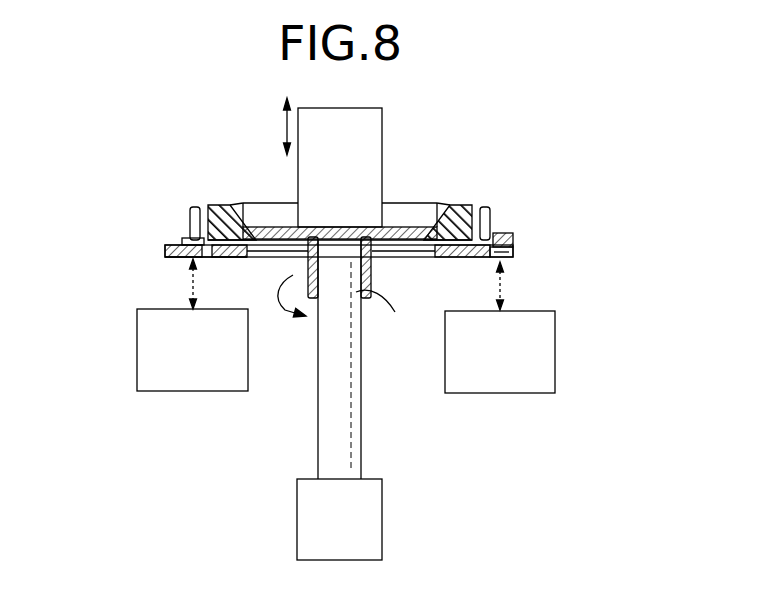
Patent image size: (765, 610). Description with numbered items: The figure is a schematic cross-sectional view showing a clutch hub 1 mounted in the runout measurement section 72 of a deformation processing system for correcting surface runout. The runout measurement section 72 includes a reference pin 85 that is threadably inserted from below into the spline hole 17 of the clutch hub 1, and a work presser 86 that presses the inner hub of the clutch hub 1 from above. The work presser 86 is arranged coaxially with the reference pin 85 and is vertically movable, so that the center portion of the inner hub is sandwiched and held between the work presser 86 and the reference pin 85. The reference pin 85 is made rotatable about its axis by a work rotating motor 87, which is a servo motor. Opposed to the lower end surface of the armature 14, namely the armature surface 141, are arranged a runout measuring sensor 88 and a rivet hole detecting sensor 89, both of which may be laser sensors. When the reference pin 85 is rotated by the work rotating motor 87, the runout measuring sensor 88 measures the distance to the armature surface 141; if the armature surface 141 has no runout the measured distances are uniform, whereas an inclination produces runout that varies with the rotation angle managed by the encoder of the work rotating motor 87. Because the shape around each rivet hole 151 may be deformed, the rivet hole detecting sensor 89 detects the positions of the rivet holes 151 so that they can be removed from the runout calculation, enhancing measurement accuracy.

The runout measurement section 72 is at (203, 158).
The clutch hub 1 is at (172, 213).
The armature 14 is at (151, 246).
The armature surface 141 is at (178, 257).
The rivet hole 151 is at (513, 254).
The work presser 86 is at (382, 140).
The reference pin 85 is at (317, 410).
The spline hole 17 is at (395, 312).
The runout measuring sensor 88 is at (178, 391).
The rivet hole detecting sensor 89 is at (515, 393).
The work rotating motor 87 is at (382, 510).